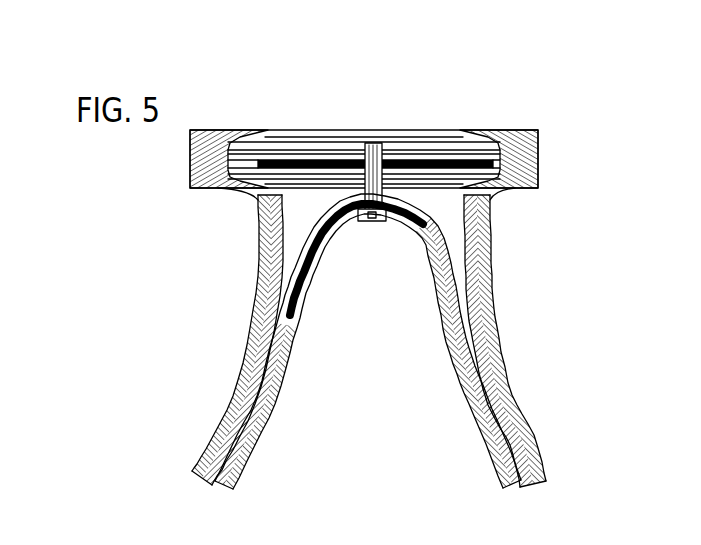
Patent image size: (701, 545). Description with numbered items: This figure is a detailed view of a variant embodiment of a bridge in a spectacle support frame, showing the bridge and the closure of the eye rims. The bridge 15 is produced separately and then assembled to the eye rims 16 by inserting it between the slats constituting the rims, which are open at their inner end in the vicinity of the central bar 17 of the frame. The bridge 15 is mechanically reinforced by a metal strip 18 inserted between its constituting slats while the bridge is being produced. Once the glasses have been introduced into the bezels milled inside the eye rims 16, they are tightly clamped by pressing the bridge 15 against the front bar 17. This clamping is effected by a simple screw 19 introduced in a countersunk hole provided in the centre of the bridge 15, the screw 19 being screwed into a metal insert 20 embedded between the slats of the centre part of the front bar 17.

The bridge 15 is at (455, 347).
The eye rims 16 is at (237, 397).
The central bar 17 is at (325, 146).
The metal strip 18 is at (300, 284).
The screw 19 is at (382, 223).
The metal insert 20 is at (437, 163).